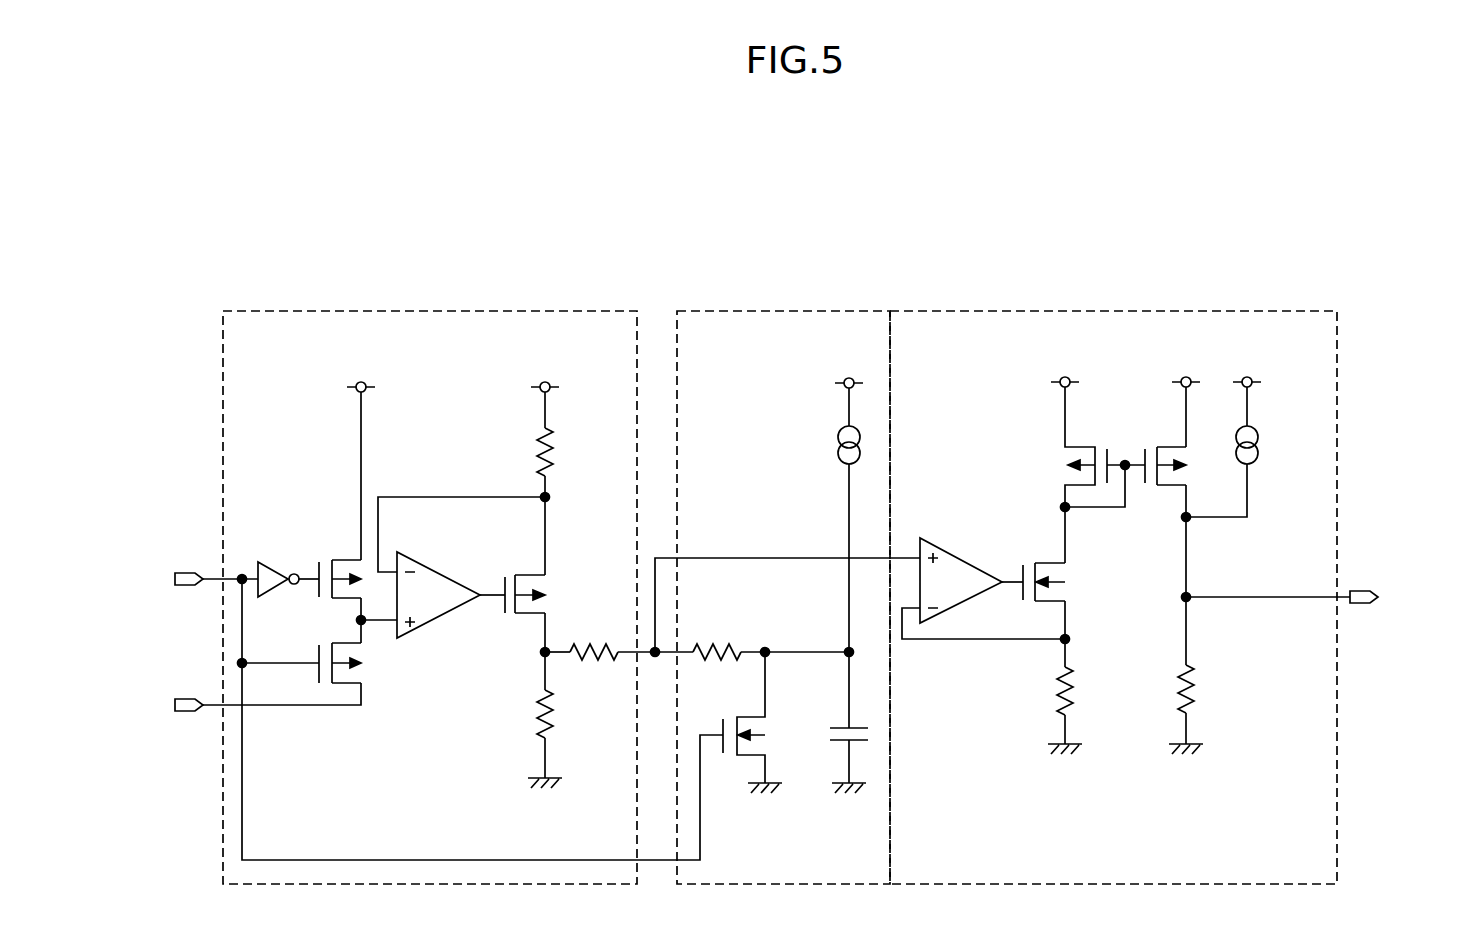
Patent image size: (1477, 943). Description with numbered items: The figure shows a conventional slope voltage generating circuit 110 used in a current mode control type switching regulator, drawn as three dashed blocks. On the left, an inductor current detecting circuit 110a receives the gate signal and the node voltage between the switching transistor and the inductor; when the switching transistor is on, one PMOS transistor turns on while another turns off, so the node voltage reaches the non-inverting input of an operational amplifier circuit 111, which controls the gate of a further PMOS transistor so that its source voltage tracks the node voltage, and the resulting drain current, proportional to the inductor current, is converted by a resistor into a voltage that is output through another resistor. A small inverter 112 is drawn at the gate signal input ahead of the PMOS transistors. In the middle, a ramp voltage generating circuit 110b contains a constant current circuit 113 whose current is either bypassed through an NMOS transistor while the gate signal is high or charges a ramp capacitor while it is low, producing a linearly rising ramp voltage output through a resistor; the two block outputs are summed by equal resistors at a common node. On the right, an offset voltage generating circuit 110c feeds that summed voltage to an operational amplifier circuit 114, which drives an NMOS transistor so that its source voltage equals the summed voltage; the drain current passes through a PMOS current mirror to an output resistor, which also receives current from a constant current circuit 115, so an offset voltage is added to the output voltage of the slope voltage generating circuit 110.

The slope voltage generating circuit 110 is at (773, 545).
The inductor current detecting circuit 110a is at (437, 311).
The ramp voltage generating circuit 110b is at (775, 311).
The offset voltage generating circuit 110c is at (976, 311).
The operational amplifier circuit 111 is at (442, 563).
The inverter 112 is at (282, 562).
The constant current circuit 113 is at (840, 467).
The operational amplifier circuit 114 is at (963, 552).
The constant current circuit 115 is at (1256, 463).